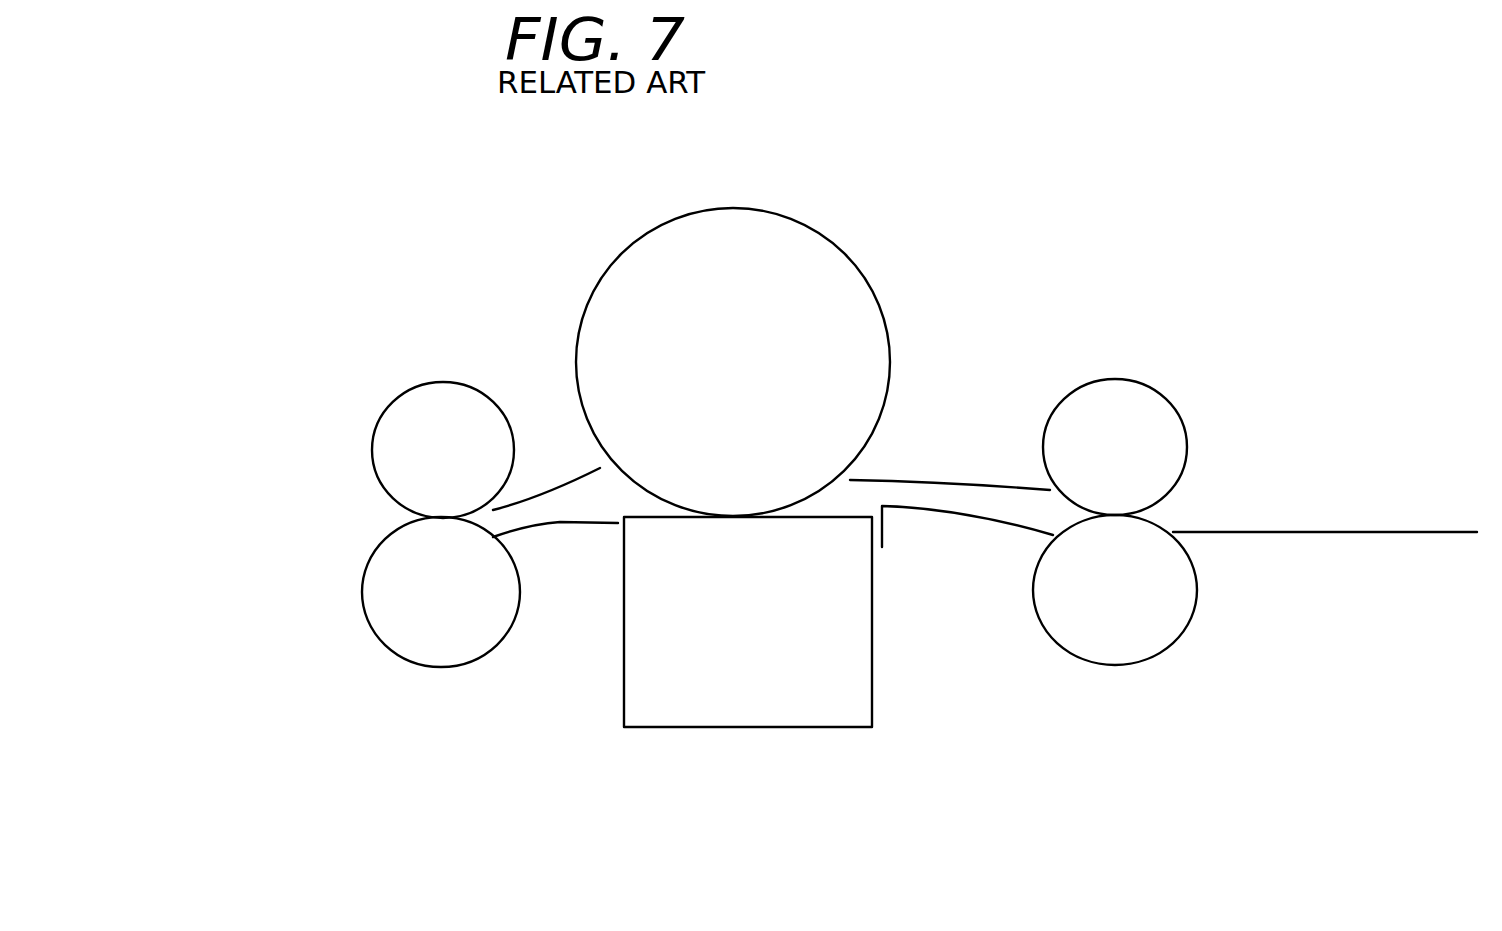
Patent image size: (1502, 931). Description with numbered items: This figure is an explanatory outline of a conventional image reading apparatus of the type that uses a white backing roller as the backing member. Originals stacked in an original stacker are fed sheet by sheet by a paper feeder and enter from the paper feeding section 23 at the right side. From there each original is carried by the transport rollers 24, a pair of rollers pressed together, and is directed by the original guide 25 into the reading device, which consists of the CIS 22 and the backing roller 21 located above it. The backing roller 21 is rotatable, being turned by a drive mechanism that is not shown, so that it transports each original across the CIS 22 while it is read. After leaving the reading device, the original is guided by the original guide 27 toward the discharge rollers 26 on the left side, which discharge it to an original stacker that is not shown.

The backing roller 21 is at (827, 203).
The CIS 22 is at (752, 757).
The paper feeding section 23 is at (1301, 510).
The transport rollers 24 is at (1194, 512).
The original guide 25 is at (999, 515).
The discharge rollers 26 is at (346, 481).
The original guide 27 is at (579, 504).